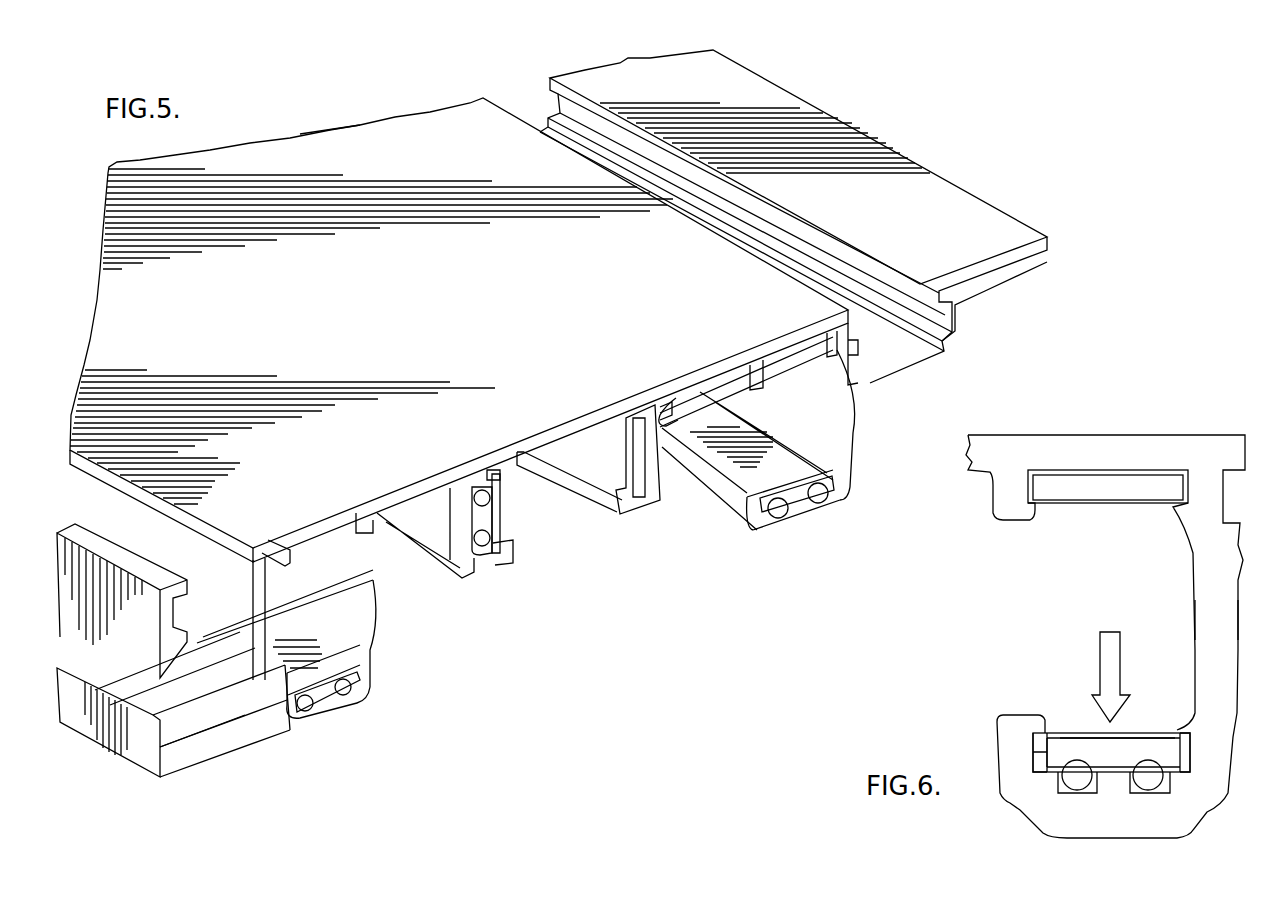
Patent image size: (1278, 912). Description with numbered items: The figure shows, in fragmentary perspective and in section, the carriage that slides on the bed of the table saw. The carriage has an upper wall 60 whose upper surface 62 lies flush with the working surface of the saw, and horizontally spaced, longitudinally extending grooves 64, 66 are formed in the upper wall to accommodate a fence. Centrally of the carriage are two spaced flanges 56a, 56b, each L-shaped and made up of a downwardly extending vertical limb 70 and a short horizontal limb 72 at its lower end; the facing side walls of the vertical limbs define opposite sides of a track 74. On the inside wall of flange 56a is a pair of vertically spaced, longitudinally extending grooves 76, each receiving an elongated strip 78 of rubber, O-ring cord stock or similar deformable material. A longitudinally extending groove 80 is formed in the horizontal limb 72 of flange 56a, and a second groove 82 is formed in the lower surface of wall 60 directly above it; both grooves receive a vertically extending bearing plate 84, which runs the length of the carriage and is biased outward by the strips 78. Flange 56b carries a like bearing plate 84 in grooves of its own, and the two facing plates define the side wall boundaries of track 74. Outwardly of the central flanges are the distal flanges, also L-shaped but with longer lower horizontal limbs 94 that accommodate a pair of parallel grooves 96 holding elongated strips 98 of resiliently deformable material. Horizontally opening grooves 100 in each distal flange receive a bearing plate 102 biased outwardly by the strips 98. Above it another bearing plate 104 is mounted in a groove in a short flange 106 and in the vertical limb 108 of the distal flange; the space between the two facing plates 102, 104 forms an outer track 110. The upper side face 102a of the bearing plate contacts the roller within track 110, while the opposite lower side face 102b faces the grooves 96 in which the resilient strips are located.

In FIG. 5, the upper wall 60 is at (356, 122).
In FIG. 5, the upper surface 62 is at (340, 286).
In FIG. 5, the groove 64 is at (66, 485).
In FIG. 5, the groove 66 is at (517, 96).
In FIG. 5, the vertical limb 70 is at (665, 488).
In FIG. 5, the horizontal limb 72 is at (652, 515).
In FIG. 5, the track 74 is at (567, 522).
In FIG. 5, the grooves 76 is at (470, 507).
In FIG. 5, the elongated strip 78 is at (473, 548).
In FIG. 5, the longitudinally extending groove 80 is at (498, 556).
In FIG. 5, the second longitudinally extending groove 82 is at (492, 470).
In FIG. 5, the bearing plate 84 is at (503, 506).
In FIG. 6, the lower horizontal limb 94 is at (1063, 838).
In FIG. 6, the parallel grooves 96 is at (1140, 795).
In FIG. 6, the elongated strips 98 is at (1090, 760).
In FIG. 6, the horizontally opening grooves 100 is at (1058, 733).
In FIG. 5, the bearing plate 102 is at (310, 673).
In FIG. 6, the bearing plate 102 is at (1136, 732).
In FIG. 6, the upper side face 102a is at (1172, 732).
In FIG. 6, the lower side face 102b is at (1045, 762).
In FIG. 5, the bearing plate 104 is at (317, 548).
In FIG. 6, the bearing plate 104 is at (1083, 503).
In FIG. 6, the short flange 106 is at (990, 498).
In FIG. 6, the vertical limb 108 is at (1243, 605).
In FIG. 5, the outer track 110 is at (352, 630).
In FIG. 6, the outer track 110 is at (1015, 605).
In FIG. 5, the flange 56a is at (425, 537).
In FIG. 5, the flange 56b is at (673, 412).